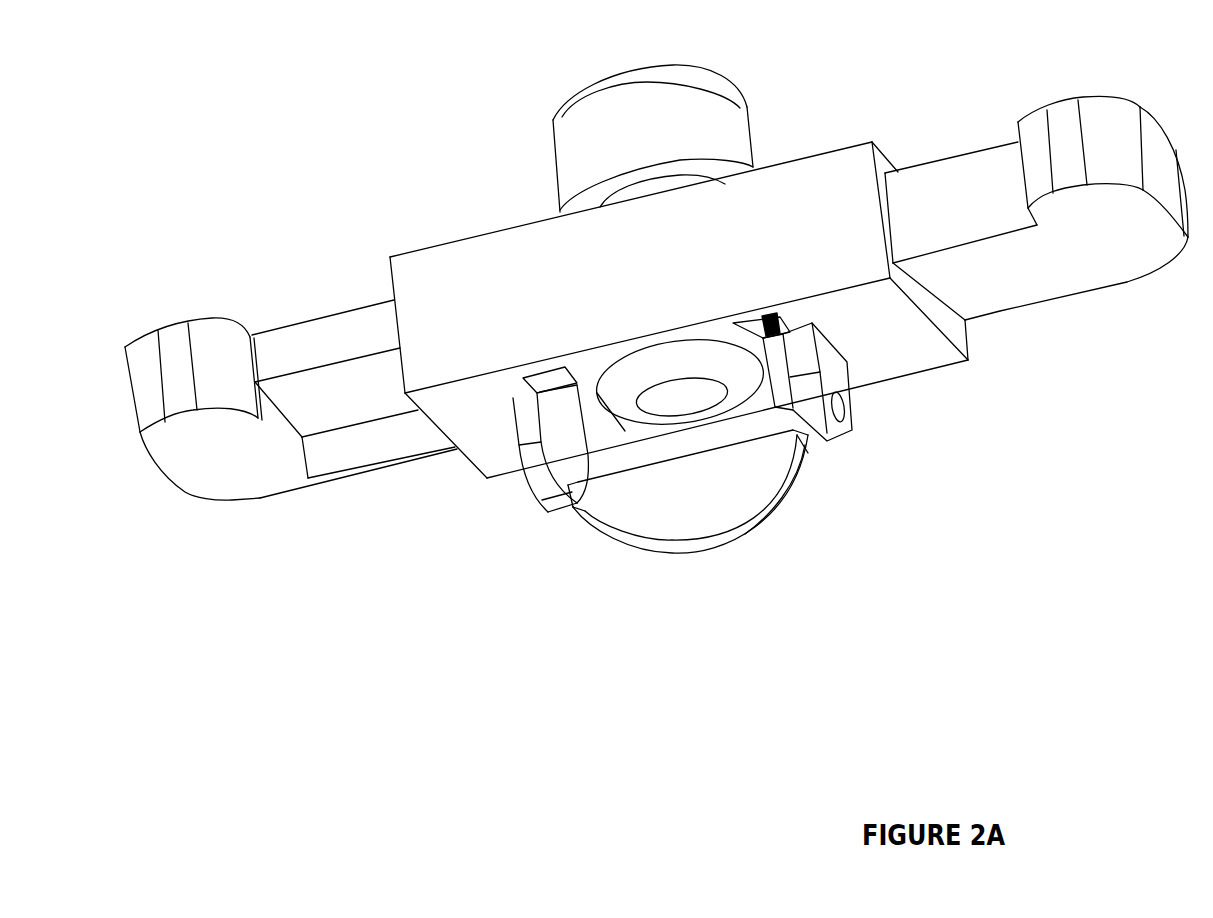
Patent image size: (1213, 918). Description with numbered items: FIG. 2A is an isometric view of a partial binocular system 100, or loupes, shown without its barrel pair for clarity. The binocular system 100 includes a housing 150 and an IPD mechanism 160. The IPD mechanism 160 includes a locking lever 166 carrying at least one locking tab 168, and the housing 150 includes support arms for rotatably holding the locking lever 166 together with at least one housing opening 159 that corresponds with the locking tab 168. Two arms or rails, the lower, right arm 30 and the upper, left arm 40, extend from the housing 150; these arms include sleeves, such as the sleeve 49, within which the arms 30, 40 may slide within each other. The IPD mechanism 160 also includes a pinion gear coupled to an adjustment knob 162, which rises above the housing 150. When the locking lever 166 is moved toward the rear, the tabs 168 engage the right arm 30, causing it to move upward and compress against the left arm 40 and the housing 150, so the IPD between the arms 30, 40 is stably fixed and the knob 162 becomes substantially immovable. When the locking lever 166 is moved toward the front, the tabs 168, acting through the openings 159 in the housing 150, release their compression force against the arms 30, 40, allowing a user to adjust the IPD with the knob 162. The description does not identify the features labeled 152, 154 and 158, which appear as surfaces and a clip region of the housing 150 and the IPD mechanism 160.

The binocular system 100 is at (645, 756).
The right arm 30 is at (1153, 118).
The left arm 40 is at (192, 497).
The sleeve 49 is at (383, 445).
The housing 150 is at (498, 230).
The top edge of body 152 is at (848, 138).
The bottom surface of body 154 is at (947, 372).
The right clip with hole 158 is at (842, 443).
The housing opening 159 is at (553, 375).
The IPD mechanism 160 is at (575, 65).
The knob 162 is at (727, 83).
The locking lever 166 is at (743, 535).
The locking tab 168 is at (572, 448).